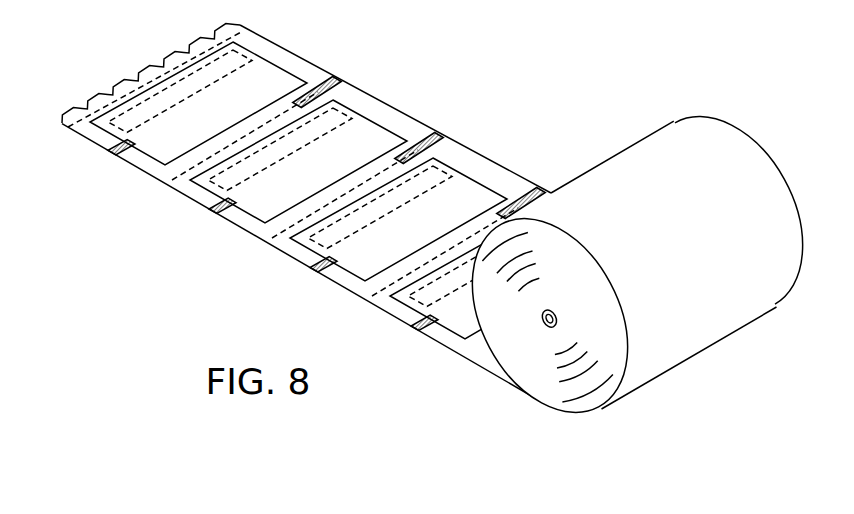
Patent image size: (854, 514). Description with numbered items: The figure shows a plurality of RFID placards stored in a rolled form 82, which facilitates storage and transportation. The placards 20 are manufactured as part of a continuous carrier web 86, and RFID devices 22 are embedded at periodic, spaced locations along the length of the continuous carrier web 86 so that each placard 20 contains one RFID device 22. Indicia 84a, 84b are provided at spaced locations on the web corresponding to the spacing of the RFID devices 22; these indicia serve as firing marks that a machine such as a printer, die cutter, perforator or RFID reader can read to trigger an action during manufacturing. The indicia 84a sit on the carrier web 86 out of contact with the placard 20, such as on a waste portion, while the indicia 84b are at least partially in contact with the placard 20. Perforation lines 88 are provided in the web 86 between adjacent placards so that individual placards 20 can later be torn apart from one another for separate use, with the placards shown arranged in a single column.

The placard 20 is at (278, 77).
The RFID device 22 is at (250, 58).
The rolled form 82 is at (722, 130).
The indicia 84a is at (118, 152).
The indicia 84b is at (340, 77).
The continuous carrier web 86 is at (78, 130).
The perforation line 88 is at (172, 182).